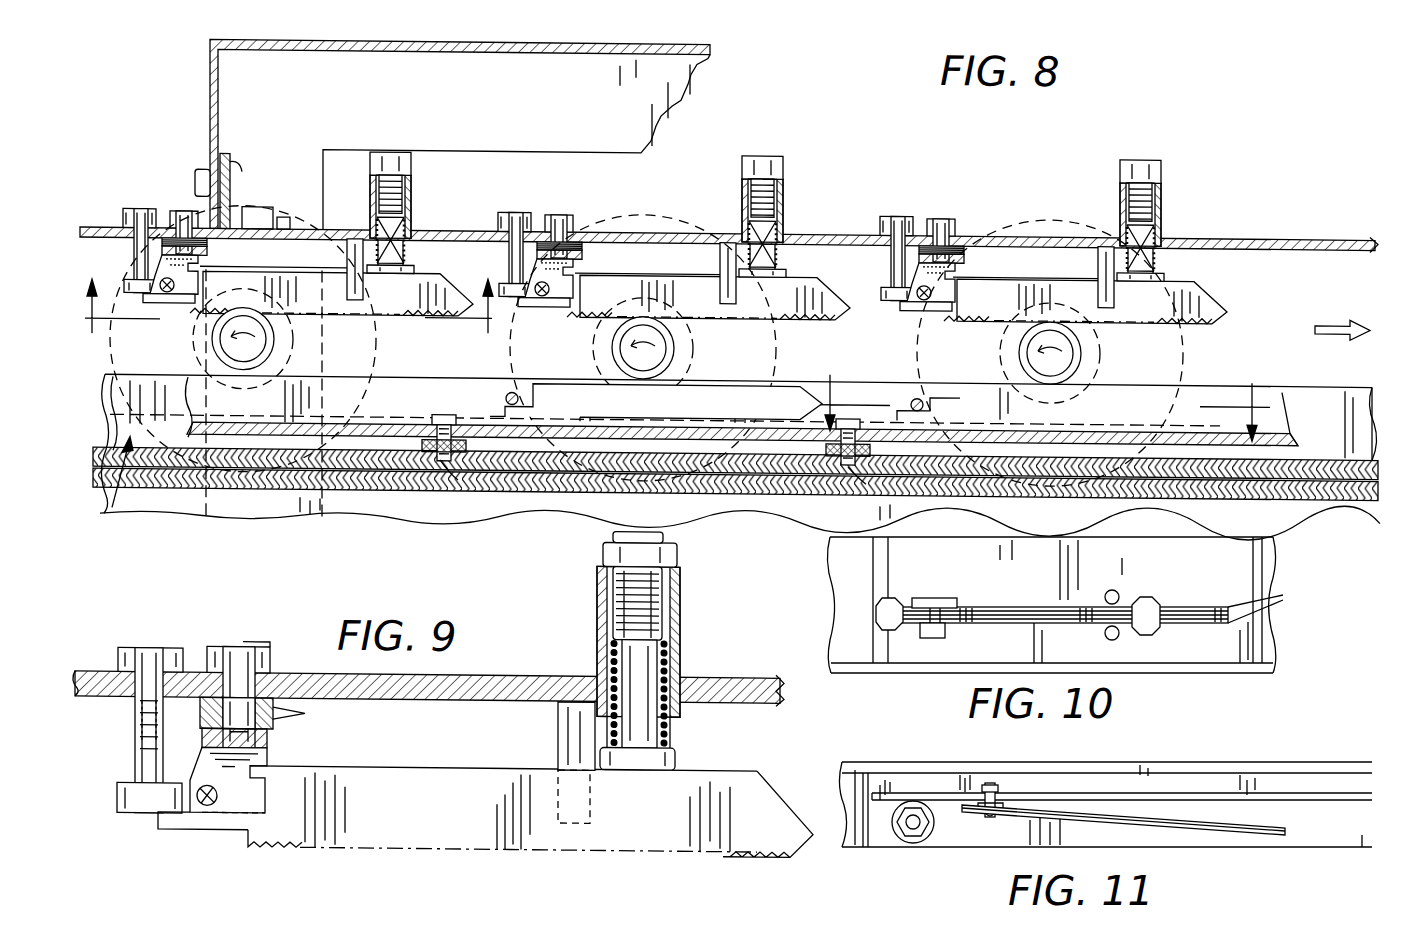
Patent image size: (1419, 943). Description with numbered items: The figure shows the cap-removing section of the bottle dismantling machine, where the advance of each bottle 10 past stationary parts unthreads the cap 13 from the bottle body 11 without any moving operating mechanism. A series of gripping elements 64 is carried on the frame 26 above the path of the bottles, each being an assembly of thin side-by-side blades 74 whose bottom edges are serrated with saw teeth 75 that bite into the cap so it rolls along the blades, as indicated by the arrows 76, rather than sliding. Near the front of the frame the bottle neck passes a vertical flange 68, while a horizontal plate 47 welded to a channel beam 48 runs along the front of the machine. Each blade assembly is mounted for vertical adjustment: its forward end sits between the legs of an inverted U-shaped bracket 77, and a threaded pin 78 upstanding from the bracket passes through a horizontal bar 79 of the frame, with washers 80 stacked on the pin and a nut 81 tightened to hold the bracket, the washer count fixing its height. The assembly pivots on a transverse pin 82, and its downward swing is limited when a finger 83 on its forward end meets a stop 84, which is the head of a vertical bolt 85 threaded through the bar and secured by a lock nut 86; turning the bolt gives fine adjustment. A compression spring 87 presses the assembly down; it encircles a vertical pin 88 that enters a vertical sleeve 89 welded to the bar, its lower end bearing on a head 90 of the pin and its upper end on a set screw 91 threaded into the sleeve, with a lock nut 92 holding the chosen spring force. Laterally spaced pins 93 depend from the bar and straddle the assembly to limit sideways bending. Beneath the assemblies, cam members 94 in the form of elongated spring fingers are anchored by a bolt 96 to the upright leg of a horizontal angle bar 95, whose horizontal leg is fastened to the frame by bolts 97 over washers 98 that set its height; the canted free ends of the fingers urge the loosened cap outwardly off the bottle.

In FIG. 8, the bottle 10 is at (283, 404).
In FIG. 8, the bottle body 11 is at (1031, 395).
In FIG. 8, the cap 13 is at (262, 375).
In FIG. 8, the frame 26 is at (386, 524).
In FIG. 8, the horizontal plate 47 is at (1320, 460).
In FIG. 8, the channel beam 48 is at (1290, 488).
In FIG. 8, the gripping element 64 is at (406, 326).
In FIG. 9, the gripping element 64 is at (733, 770).
In FIG. 10, the gripping element 64 is at (1040, 605).
In FIG. 8, the vertical flange 68 is at (1335, 445).
In FIG. 10, the vertical flange 68 is at (1051, 605).
In FIG. 11, the vertical flange 68 is at (1195, 762).
In FIG. 9, the blades 74 is at (462, 797).
In FIG. 10, the blades 74 is at (1275, 603).
In FIG. 8, the saw teeth 75 is at (363, 275).
In FIG. 9, the saw teeth 75 is at (505, 846).
In FIG. 8, the arrows 76 is at (262, 330).
In FIG. 8, the inverted U-shaped bracket 77 is at (200, 268).
In FIG. 9, the inverted U-shaped bracket 77 is at (267, 758).
In FIG. 10, the inverted U-shaped bracket 77 is at (945, 630).
In FIG. 8, the threaded pin 78 is at (185, 210).
In FIG. 9, the threaded pin 78 is at (240, 645).
In FIG. 8, the horizontal bar 79 is at (595, 227).
In FIG. 9, the horizontal bar 79 is at (545, 670).
In FIG. 8, the washers 80 is at (563, 246).
In FIG. 9, the washers 80 is at (305, 711).
In FIG. 9, the nut 81 is at (270, 645).
In FIG. 8, the transverse pin 82 is at (167, 292).
In FIG. 9, the transverse pin 82 is at (217, 794).
In FIG. 10, the transverse pin 82 is at (935, 598).
In FIG. 8, the finger 83 is at (547, 302).
In FIG. 9, the finger 83 is at (193, 828).
In FIG. 10, the finger 83 is at (892, 598).
In FIG. 8, the stop 84 is at (130, 284).
In FIG. 9, the stop 84 is at (125, 812).
In FIG. 10, the stop 84 is at (880, 610).
In FIG. 8, the vertical bolt 85 is at (140, 243).
In FIG. 9, the vertical bolt 85 is at (136, 722).
In FIG. 9, the lock nut 86 is at (125, 645).
In FIG. 8, the compression spring 87 is at (410, 228).
In FIG. 9, the compression spring 87 is at (672, 738).
In FIG. 9, the vertical pin 88 is at (650, 672).
In FIG. 8, the vertical sleeve 89 is at (410, 192).
In FIG. 9, the vertical sleeve 89 is at (680, 610).
In FIG. 8, the head 90 is at (390, 270).
In FIG. 9, the head 90 is at (633, 764).
In FIG. 10, the head 90 is at (1150, 598).
In FIG. 8, the set screw 91 is at (382, 190).
In FIG. 9, the set screw 91 is at (660, 580).
In FIG. 9, the lock nut 92 is at (680, 548).
In FIG. 8, the pins 93 is at (350, 272).
In FIG. 9, the pins 93 is at (565, 735).
In FIG. 10, the pins 93 is at (1115, 590).
In FIG. 8, the cam member 94 is at (745, 388).
In FIG. 11, the cam member 94 is at (1215, 835).
In FIG. 8, the horizontal angle bar 95 is at (518, 395).
In FIG. 11, the horizontal angle bar 95 is at (1100, 793).
In FIG. 8, the bolt 96 is at (520, 396).
In FIG. 11, the bolt 96 is at (993, 783).
In FIG. 8, the bolts 97 is at (432, 413).
In FIG. 11, the bolts 97 is at (913, 843).
In FIG. 8, the washers 98 is at (450, 456).